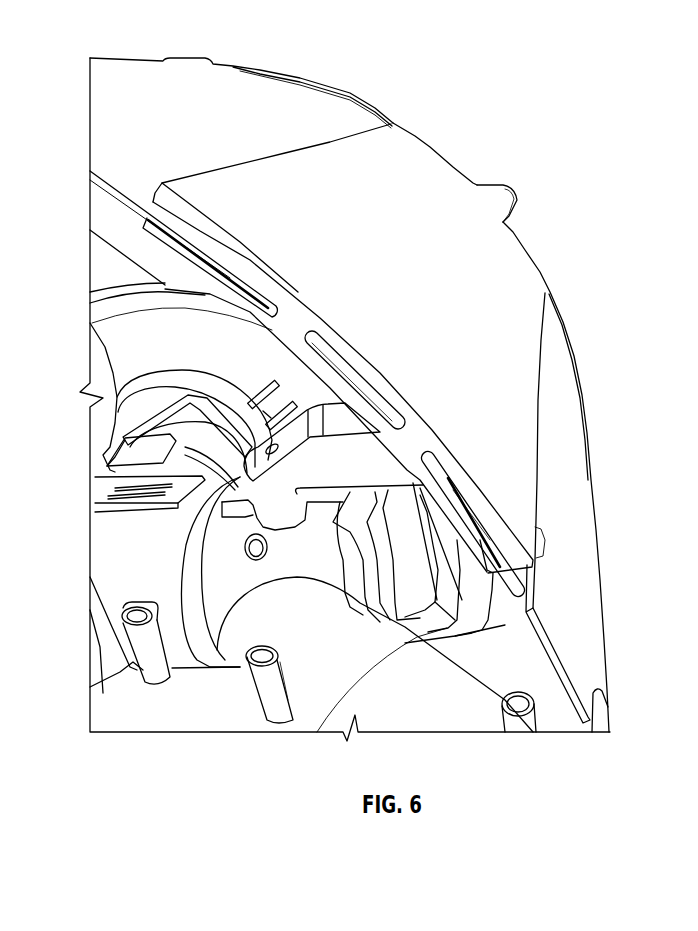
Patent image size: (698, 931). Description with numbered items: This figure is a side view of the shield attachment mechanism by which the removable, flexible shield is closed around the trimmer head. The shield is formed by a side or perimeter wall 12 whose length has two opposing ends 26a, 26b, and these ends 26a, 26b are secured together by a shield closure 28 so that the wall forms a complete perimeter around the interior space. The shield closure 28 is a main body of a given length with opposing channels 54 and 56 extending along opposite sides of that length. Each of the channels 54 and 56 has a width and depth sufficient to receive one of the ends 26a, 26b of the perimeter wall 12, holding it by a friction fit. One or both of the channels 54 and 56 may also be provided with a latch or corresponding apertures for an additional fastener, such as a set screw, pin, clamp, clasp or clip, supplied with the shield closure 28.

The perimeter wall 12 is at (158, 110).
The shield closure 28 is at (483, 260).
The end of the shield 26a is at (478, 530).
The end of the shield 26b is at (143, 228).
The channel 54 is at (437, 462).
The channel 56 is at (160, 285).